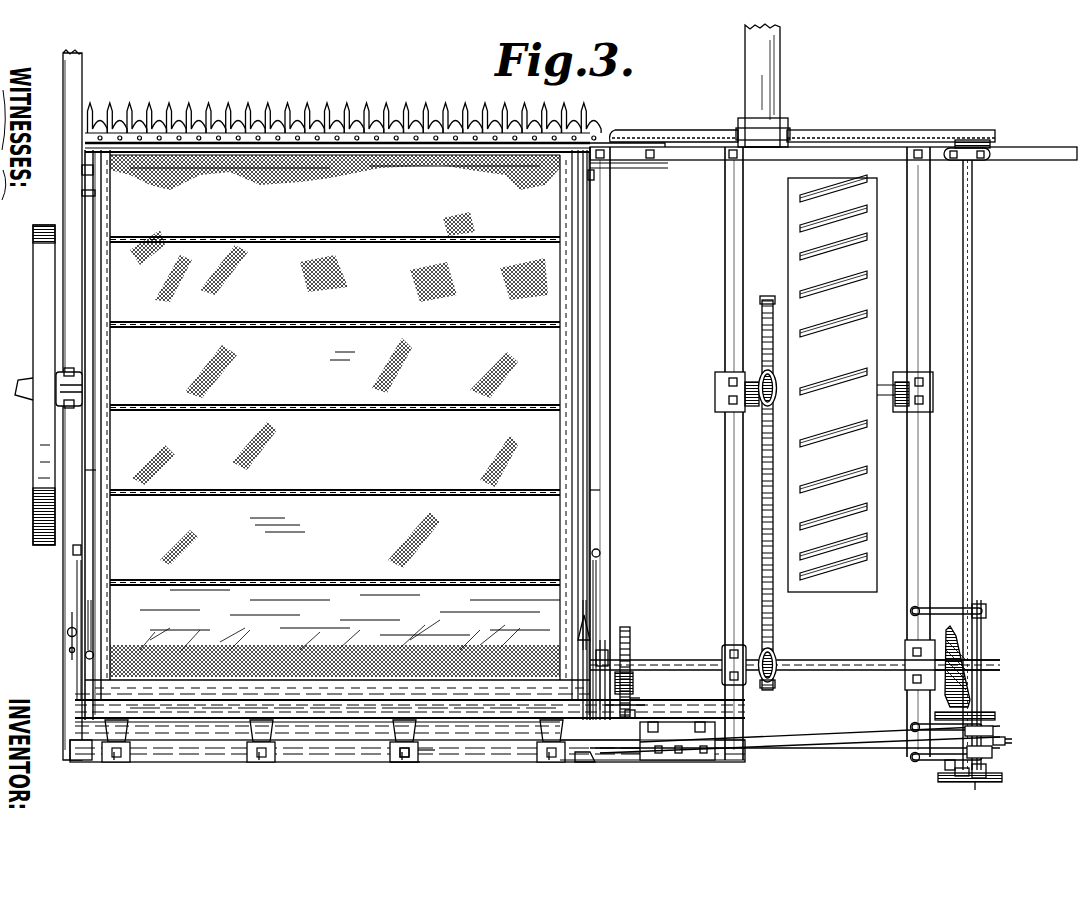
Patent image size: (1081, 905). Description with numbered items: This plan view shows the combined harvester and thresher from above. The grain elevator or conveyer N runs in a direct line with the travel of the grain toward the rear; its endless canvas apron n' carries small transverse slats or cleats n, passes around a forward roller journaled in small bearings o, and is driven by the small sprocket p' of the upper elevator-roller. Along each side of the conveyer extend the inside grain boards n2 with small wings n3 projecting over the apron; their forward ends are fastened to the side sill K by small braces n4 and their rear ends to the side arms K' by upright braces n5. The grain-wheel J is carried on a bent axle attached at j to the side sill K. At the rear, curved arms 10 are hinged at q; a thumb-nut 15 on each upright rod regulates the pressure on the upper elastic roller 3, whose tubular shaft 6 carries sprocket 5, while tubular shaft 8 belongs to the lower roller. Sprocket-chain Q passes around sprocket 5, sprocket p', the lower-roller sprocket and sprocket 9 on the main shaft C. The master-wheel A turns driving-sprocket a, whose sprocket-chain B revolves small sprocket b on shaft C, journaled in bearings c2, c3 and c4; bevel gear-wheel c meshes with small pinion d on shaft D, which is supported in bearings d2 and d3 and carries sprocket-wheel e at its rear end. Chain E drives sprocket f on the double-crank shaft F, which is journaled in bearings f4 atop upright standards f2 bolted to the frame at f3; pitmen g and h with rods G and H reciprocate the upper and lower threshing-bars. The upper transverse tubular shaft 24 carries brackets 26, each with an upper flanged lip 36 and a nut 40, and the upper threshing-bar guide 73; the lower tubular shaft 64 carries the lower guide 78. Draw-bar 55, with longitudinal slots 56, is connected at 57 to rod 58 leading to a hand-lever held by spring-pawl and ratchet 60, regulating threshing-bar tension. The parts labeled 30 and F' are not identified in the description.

The side sill K is at (335, 405).
The side arms K' is at (360, 480).
The grain-wheel J is at (35, 385).
The axle attachment point j is at (70, 370).
The small bearings o is at (82, 170).
The transverse slats or cleats n is at (343, 351).
The endless canvas apron n' is at (335, 416).
The inside grain boards n2 is at (96, 213).
The small wings n3 is at (111, 233).
The small braces n4 is at (626, 207).
The upright braces n5 is at (92, 625).
The grain elevator or conveyer N is at (345, 415).
The pivot hinge q is at (76, 546).
The curved arms 10 is at (78, 578).
The thumb-nut 15 is at (68, 631).
The upper elastic roller 3 is at (410, 699).
The brackets 26 is at (118, 725).
The bar 30 is at (345, 703).
The transverse tubular shaft 24 is at (348, 722).
The nut 40 is at (402, 757).
The longitudinal slots 56 is at (428, 755).
The upper flanged lip 36 is at (410, 763).
The draw-bar 55 is at (407, 744).
The connection point 57 is at (585, 765).
The lower transverse tubular shaft 64 is at (622, 760).
The upper threshing-bar guide 73 is at (672, 740).
The lower threshing-bar guide 78 is at (693, 750).
The pitman-rod H is at (800, 750).
The rod 58 is at (790, 738).
The pitman-rod G is at (856, 742).
The sprocket 9 is at (631, 627).
The small sprocket p' is at (795, 655).
The sprocket-chain Q is at (633, 680).
The tubular shaft 6 is at (639, 698).
The sprocket 5 is at (646, 705).
The tubular shaft 8 is at (636, 717).
The bearing c4 is at (606, 655).
The bearing c3 is at (728, 655).
The main shaft C is at (833, 392).
The master-wheel A is at (832, 383).
The sprocket-chain B is at (765, 498).
The driving-sprocket a is at (766, 306).
The small sprocket b is at (768, 686).
The shaft D is at (970, 443).
The small pinion d is at (972, 692).
The bearing d2 is at (969, 160).
The bearing d3 is at (948, 770).
The double-crank shaft F is at (989, 685).
The clutch member F' is at (1004, 719).
The bevel gear-wheel c is at (960, 655).
The bearing c2 is at (910, 657).
The spring-pawl and ratchet 60 is at (948, 716).
The sprocket f is at (1000, 782).
The upright rods or standards f2 is at (906, 782).
The foot bolting point f3 is at (916, 606).
The bearing f4 is at (982, 606).
The pitman g is at (1013, 740).
The pitman h is at (993, 752).
The sprocket-wheel e is at (958, 777).
The chain E is at (975, 784).